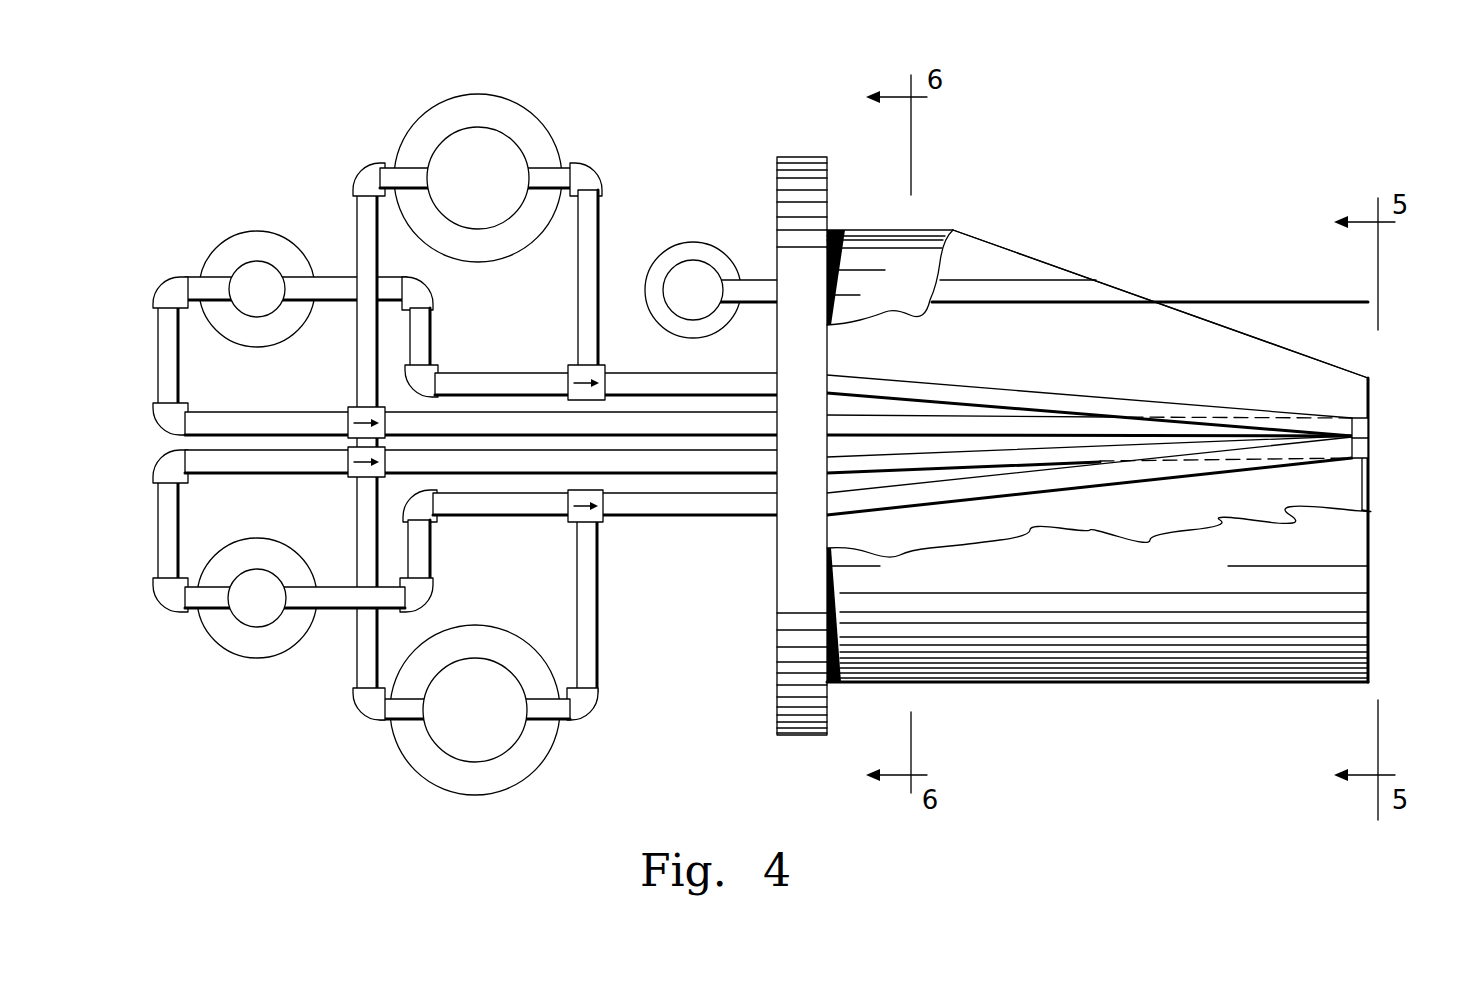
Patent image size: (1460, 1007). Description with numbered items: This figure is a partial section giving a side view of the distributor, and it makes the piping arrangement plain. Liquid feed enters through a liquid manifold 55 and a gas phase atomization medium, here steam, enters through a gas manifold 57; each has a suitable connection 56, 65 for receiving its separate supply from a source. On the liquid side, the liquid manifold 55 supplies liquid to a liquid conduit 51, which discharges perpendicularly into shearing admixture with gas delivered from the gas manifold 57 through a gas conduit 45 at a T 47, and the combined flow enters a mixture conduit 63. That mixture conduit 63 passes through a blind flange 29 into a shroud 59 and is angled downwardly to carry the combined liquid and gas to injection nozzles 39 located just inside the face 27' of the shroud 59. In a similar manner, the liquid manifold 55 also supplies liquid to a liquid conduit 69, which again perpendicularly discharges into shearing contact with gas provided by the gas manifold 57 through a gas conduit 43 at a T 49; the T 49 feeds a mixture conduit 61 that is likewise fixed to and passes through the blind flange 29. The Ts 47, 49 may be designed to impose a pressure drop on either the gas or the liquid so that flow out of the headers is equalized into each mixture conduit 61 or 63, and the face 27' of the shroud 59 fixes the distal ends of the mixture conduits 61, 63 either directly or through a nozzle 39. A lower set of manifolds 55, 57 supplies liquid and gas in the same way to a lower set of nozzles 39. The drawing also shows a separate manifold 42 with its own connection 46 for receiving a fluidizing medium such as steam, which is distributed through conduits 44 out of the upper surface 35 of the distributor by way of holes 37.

The face 27' is at (1128, 456).
The blind flange 29 is at (800, 738).
The upper surface 35 is at (1212, 320).
The holes 37 is at (1125, 292).
The injection nozzles 39 is at (1368, 438).
The manifold 42 is at (657, 272).
The gas conduit 43 is at (150, 370).
The conduits 44 is at (748, 276).
The gas conduit 45 is at (333, 277).
The connection 46 is at (660, 325).
The T 47 is at (568, 375).
The T 49 is at (350, 410).
The liquid conduit 51 is at (603, 218).
The liquid manifold 55 is at (500, 128).
The connection 56 is at (553, 140).
The gas manifold 57 is at (233, 266).
The shroud 59 is at (1148, 688).
The mixture conduit 61 is at (722, 425).
The mixture conduit 63 is at (708, 368).
The connection 65 is at (262, 231).
The liquid conduit 69 is at (355, 360).